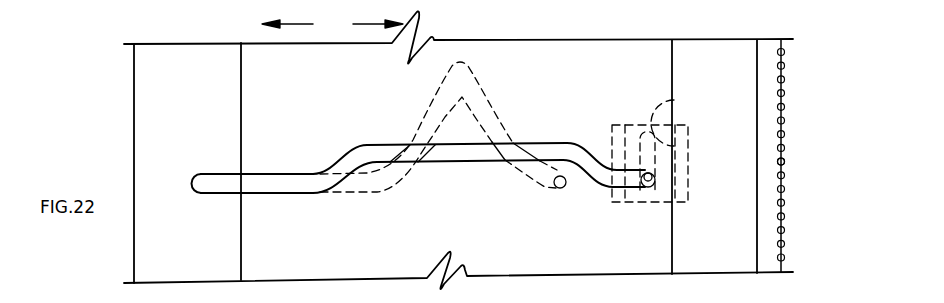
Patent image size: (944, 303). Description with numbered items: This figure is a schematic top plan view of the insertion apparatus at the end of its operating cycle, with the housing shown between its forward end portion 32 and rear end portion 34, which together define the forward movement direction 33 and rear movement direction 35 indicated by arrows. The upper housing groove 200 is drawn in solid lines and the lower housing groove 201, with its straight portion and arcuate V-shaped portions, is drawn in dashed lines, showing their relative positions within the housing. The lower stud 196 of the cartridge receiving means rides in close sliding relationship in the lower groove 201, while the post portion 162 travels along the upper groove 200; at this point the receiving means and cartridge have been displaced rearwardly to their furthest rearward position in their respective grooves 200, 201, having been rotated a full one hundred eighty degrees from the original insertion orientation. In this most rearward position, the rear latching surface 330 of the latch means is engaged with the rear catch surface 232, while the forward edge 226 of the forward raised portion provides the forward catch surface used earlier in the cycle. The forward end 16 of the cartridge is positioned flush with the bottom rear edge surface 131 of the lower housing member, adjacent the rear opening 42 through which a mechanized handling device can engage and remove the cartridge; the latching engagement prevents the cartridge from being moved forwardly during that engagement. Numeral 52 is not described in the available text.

The forward end portion 32 is at (133, 89).
The forward edge 226 is at (241, 60).
The forward movement direction 33 is at (298, 22).
The rear movement direction 35 is at (366, 22).
The groove 200 is at (277, 185).
The groove 201 is at (447, 97).
The lower stud 196 is at (561, 188).
The post portion 162 is at (647, 190).
The rear latching surface 330 is at (676, 96).
The forward tapered surface 232 is at (673, 62).
The rear end portion 34 is at (819, 57).
The forward end 16 is at (784, 97).
The bottom rear edge surface 131 is at (784, 163).
The rear opening 42 is at (758, 255).
The base 52 is at (612, 297).